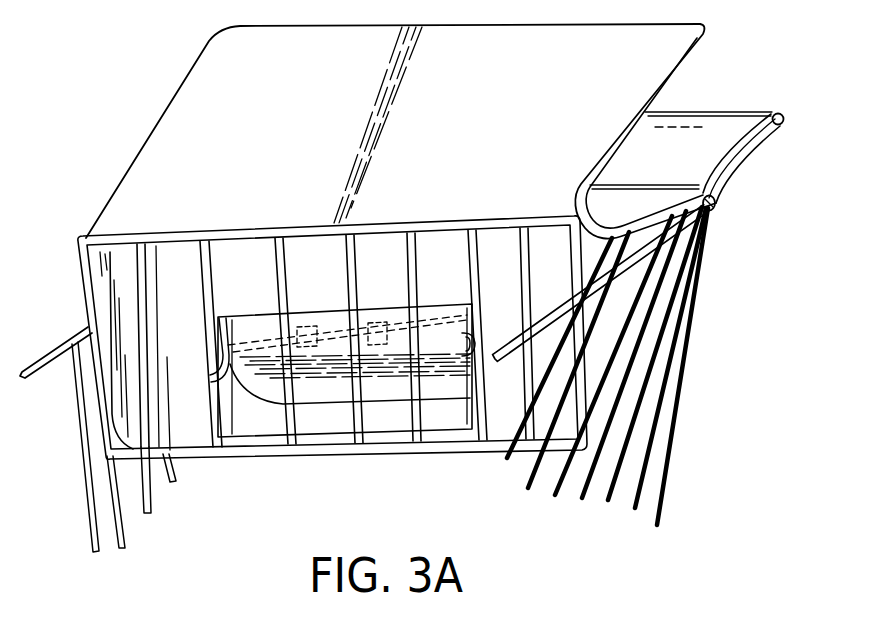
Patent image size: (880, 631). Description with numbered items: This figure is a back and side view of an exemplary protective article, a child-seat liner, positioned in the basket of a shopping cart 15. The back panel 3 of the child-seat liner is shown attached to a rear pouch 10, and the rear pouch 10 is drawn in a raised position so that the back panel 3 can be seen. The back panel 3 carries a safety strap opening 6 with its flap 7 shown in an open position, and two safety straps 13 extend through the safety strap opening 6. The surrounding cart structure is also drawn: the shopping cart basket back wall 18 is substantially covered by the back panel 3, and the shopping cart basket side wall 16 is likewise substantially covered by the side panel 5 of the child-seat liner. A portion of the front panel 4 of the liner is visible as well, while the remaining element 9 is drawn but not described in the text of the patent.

The rear pouch 10 is at (141, 196).
The end flap 9 is at (723, 136).
The front panel 4 is at (668, 206).
The side panel 5 is at (619, 365).
The shopping cart basket side wall 16 is at (614, 337).
The shopping cart 15 is at (674, 458).
The back panel 3 is at (118, 387).
The shopping cart basket back wall 18 is at (138, 273).
The safety strap opening 6 is at (324, 421).
The flap 7 is at (390, 380).
The safety straps 13 is at (233, 372).